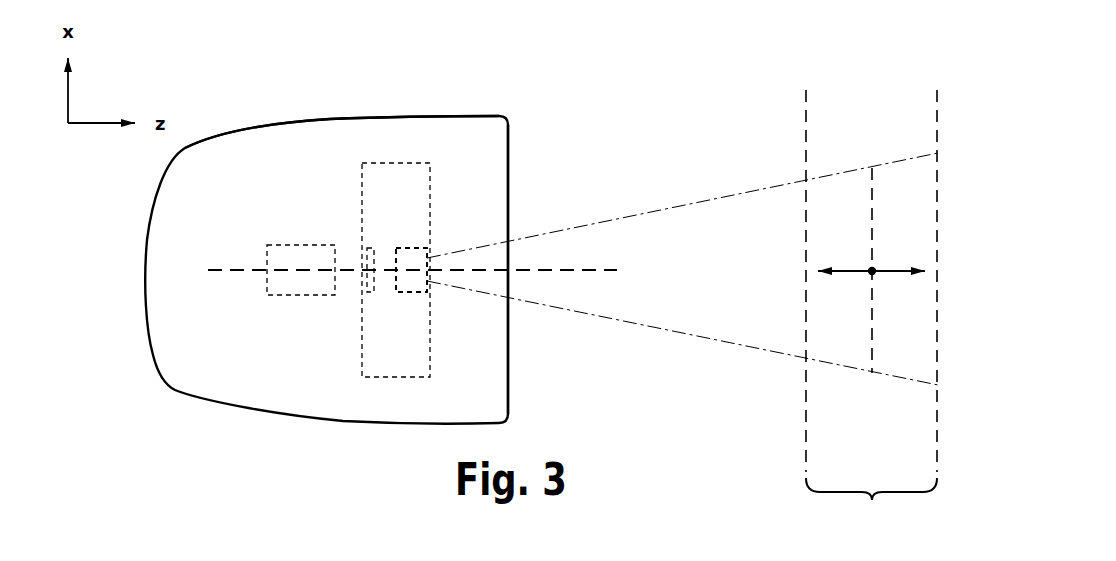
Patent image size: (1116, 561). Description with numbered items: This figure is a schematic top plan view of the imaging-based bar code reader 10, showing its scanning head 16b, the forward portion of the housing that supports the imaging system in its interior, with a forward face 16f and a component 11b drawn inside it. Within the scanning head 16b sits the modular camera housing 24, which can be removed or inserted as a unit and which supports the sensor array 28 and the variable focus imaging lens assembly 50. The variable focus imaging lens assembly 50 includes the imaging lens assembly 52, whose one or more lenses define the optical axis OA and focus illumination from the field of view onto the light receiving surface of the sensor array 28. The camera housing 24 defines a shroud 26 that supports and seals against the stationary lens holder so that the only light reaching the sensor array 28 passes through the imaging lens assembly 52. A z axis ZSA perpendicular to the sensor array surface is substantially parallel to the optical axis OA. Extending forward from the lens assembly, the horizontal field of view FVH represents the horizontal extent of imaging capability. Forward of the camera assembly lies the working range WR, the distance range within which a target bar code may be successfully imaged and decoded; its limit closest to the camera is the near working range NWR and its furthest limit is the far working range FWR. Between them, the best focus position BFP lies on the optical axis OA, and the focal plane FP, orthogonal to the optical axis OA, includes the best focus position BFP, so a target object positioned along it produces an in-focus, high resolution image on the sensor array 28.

The bar code reader 10 is at (199, 112).
The scanning head portion 16b is at (302, 114).
The housing front portion 16f is at (508, 168).
The component 11b is at (306, 268).
The camera housing 24 is at (403, 163).
The shroud 26 is at (404, 296).
The sensor array 28 is at (363, 278).
The variable focus imaging lens assembly 50 is at (415, 296).
The imaging lens assembly 52 is at (413, 243).
The z axis of sensor array ZSA is at (250, 272).
The optical axis OA is at (605, 272).
The horizontal field of view FVH is at (662, 212).
The focal plane FP is at (872, 212).
The best focus position BFP is at (870, 268).
The near working range NWR is at (805, 393).
The far working range FWR is at (937, 405).
The working range WR is at (871, 401).